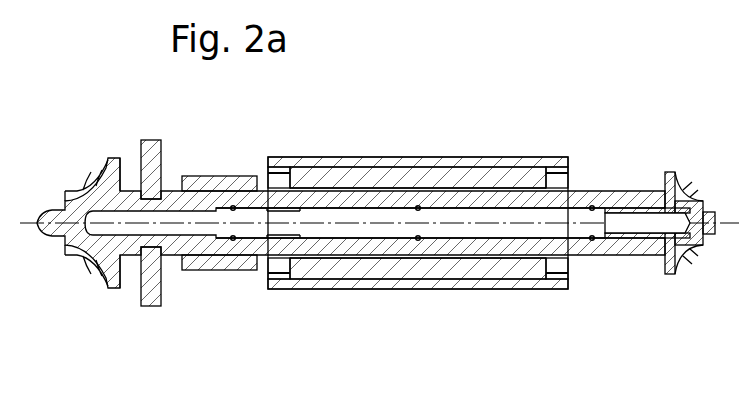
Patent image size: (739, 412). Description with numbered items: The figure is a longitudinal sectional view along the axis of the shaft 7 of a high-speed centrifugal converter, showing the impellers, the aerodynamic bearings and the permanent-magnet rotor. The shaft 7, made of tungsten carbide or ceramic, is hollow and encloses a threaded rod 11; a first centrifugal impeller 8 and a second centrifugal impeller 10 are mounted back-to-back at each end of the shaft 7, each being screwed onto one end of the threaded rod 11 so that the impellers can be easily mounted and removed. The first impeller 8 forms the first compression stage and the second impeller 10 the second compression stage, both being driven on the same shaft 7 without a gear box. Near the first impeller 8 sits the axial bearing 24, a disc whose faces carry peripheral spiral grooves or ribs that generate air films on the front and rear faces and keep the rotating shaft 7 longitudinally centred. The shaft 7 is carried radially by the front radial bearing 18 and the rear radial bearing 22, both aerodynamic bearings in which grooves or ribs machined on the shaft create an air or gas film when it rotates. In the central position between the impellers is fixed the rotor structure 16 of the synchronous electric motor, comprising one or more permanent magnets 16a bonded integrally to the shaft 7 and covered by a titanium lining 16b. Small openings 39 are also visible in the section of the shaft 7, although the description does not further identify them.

The shaft 7 is at (267, 248).
The first centrifugal impeller 8 is at (113, 273).
The second centrifugal impeller 10 is at (683, 267).
The threaded rod 11 is at (499, 233).
The rotor structure 16 is at (418, 146).
The permanent magnet 16a is at (318, 271).
The titanium lining 16b is at (372, 284).
The front radial bearing 18 is at (210, 266).
The rear radial bearing 22 is at (625, 251).
The axial bearing 24 is at (151, 298).
The radial holes 39 is at (421, 241).